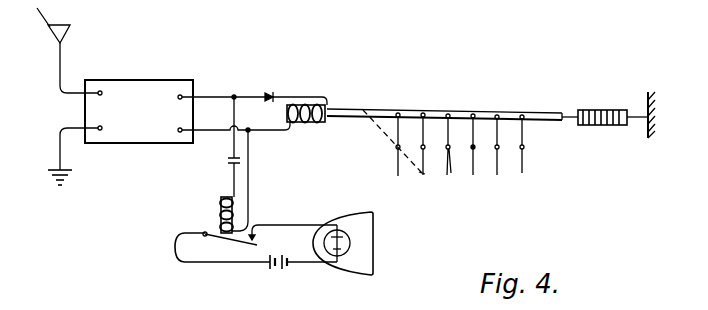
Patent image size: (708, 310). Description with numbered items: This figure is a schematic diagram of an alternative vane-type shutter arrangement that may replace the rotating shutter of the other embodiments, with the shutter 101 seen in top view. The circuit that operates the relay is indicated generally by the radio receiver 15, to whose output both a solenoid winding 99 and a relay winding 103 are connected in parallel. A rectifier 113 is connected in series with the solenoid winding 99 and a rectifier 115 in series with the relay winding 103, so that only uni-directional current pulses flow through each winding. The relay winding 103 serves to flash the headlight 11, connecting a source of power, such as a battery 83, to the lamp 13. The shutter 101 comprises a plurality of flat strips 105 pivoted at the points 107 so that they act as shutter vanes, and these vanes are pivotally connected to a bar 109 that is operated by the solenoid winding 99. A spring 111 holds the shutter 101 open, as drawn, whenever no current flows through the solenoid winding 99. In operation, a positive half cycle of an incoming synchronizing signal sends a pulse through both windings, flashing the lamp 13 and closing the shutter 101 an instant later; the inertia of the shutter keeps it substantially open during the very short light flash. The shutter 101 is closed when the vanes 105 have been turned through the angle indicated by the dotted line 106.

The radio receiver 15 is at (147, 85).
The rectifier 113 is at (274, 95).
The rectifier 115 is at (232, 160).
The relay winding 103 is at (221, 207).
The solenoid winding 99 is at (308, 122).
The shutter 101 is at (493, 101).
The dotted line 106 is at (383, 130).
The pivot points 107 is at (423, 149).
The flat strips 105 is at (473, 167).
The bar 109 is at (543, 118).
The spring 111 is at (614, 110).
The headlight 11 is at (400, 243).
The battery 83 is at (284, 268).
The lamp 13 is at (343, 248).